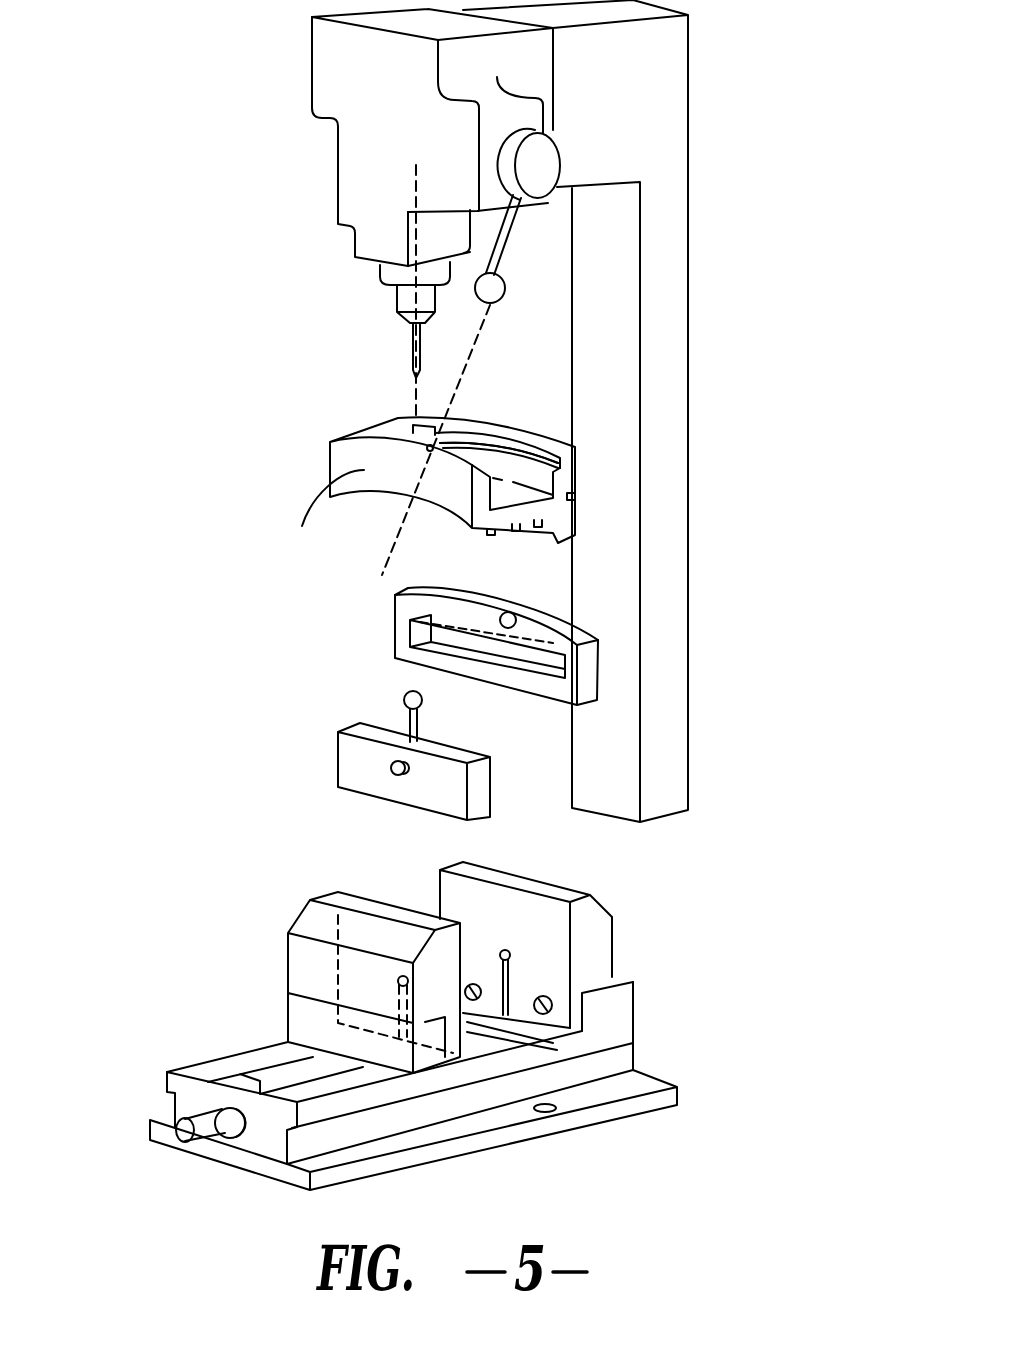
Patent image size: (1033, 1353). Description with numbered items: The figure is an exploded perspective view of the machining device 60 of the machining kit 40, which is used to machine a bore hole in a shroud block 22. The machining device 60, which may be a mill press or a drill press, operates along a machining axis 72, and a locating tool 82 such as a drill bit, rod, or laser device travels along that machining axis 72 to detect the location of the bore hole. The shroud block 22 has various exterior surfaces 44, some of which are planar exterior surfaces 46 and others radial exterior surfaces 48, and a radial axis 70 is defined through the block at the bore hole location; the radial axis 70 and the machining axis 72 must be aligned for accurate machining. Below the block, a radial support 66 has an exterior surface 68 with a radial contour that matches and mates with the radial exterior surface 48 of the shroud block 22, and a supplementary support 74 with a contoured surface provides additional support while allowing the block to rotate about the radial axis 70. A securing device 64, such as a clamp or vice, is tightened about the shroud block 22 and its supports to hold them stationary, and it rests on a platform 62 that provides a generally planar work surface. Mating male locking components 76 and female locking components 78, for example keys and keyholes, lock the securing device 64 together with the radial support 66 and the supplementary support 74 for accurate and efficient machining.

The machining kit 40 is at (134, 100).
The machining device 60 is at (739, 126).
The shroud block 22 is at (422, 444).
The locating tool 82 is at (403, 342).
The machining axis 72 is at (405, 400).
The radial axis 70 is at (484, 350).
The radial exterior surface 48 is at (478, 424).
The exterior surface 44 is at (541, 428).
The planar exterior surface 46 is at (322, 513).
The exterior surface of radial support 68 is at (493, 600).
The male locking component 76 is at (510, 612).
The radial support 66 is at (459, 626).
The supplementary support 74 is at (369, 708).
The securing device 64 is at (321, 884).
The female locking component 78 is at (403, 977).
The platform 62 is at (493, 1048).